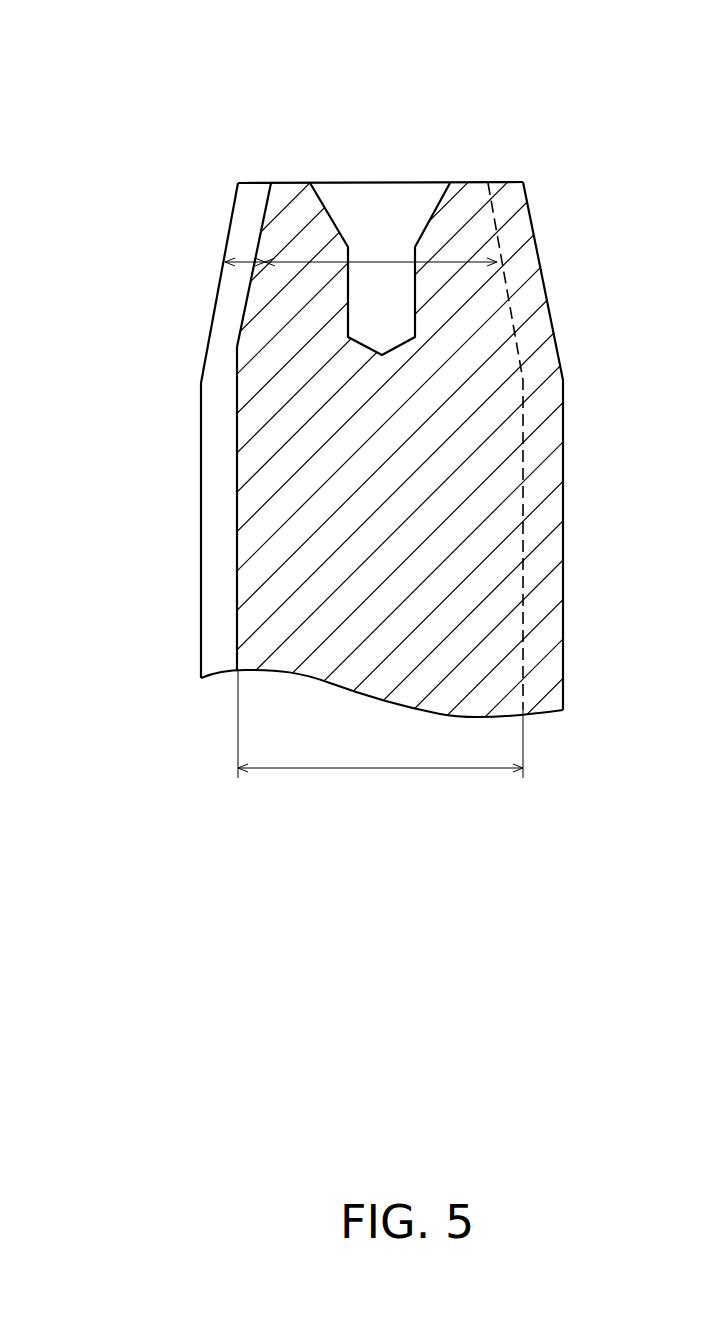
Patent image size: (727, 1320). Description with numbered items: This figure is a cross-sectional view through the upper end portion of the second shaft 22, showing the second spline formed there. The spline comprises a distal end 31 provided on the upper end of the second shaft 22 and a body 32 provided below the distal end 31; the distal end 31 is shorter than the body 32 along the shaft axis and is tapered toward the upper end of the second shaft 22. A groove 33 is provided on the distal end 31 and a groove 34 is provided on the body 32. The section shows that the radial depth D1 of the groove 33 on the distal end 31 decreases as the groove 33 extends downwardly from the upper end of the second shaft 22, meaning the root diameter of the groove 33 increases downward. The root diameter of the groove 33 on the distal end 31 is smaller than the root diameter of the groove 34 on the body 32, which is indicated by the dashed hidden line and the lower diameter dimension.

The second shaft 22 is at (170, 206).
The distal end 31 is at (228, 220).
The body 32 is at (201, 463).
The groove 33 is at (258, 282).
The groove 34 is at (237, 519).
The radial depth D1 is at (254, 262).